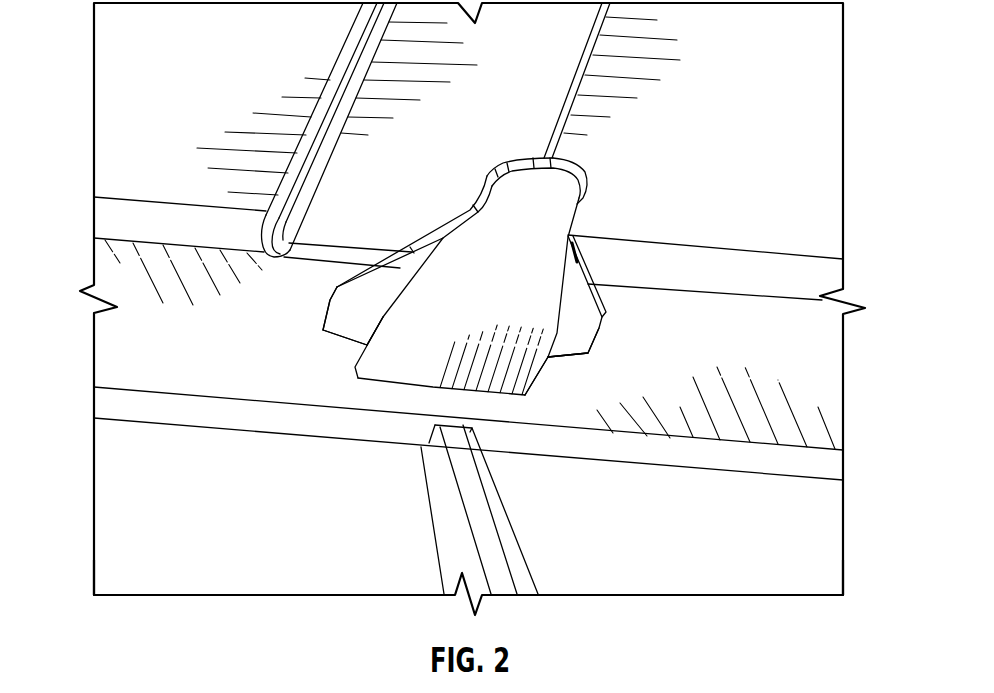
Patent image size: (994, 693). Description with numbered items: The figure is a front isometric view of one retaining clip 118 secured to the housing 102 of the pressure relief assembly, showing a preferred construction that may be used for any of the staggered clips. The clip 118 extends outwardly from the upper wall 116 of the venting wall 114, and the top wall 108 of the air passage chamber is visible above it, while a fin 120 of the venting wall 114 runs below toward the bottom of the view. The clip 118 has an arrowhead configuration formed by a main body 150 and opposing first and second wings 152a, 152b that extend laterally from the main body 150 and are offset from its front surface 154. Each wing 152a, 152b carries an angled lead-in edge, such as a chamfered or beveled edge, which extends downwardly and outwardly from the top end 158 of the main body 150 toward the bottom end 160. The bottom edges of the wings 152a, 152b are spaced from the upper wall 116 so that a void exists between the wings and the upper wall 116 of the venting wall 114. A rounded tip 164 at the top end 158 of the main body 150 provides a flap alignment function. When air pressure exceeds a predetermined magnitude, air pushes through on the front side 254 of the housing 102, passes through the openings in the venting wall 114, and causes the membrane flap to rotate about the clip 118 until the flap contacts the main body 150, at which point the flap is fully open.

The housing 102 is at (124, 48).
The top wall 108 is at (815, 198).
The venting wall 114 is at (815, 370).
The upper wall 116 is at (128, 372).
The clip 118 is at (573, 203).
The fin 120 is at (468, 508).
The main body 150 is at (428, 376).
The first wing 152a is at (337, 316).
The second wing 152b is at (585, 336).
The front surface 154 is at (427, 323).
The top end 158 is at (548, 187).
The bottom end 160 is at (507, 386).
The rounded tip 164 is at (507, 167).
The front side 254 is at (663, 467).